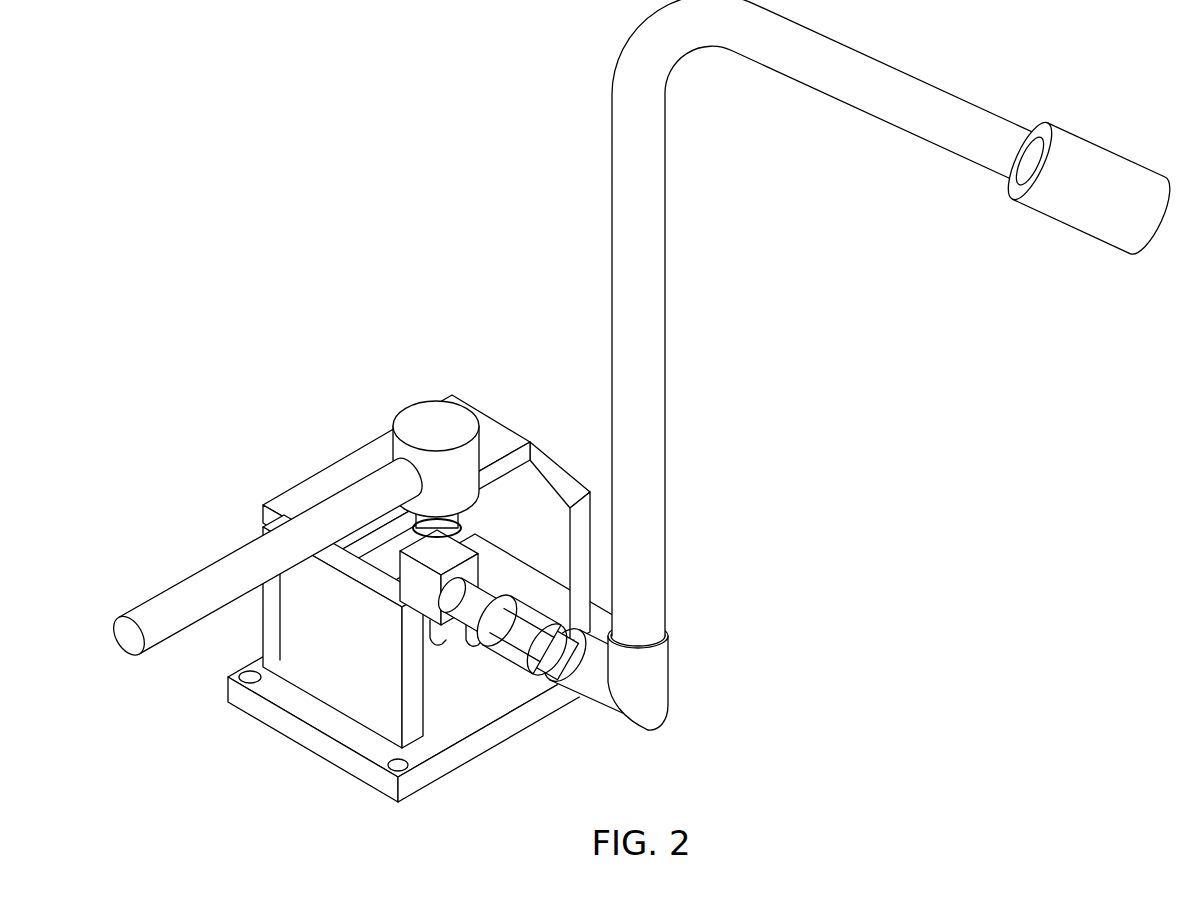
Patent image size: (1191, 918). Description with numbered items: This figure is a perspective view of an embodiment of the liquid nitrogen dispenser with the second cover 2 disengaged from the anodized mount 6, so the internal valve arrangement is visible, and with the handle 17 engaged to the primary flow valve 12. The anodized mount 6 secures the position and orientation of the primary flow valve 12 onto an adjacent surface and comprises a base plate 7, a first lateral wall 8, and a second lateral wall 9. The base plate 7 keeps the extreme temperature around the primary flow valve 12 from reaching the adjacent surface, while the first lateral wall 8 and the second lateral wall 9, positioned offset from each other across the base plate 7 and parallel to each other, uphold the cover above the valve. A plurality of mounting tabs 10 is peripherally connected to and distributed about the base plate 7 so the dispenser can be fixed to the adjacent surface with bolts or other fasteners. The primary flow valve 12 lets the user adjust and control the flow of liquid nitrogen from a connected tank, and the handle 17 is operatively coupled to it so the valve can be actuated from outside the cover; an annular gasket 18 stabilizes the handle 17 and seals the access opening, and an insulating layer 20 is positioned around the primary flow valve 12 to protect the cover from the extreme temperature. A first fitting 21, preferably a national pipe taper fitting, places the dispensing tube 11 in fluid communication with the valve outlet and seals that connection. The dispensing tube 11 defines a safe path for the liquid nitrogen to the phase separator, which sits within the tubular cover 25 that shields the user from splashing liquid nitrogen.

The second cover 2 is at (310, 493).
The anodized mount 6 is at (553, 727).
The base plate 7 is at (503, 727).
The first lateral wall 8 is at (300, 647).
The second lateral wall 9 is at (572, 492).
The plurality of mounting tabs 10 is at (240, 668).
The dispensing tube 11 is at (627, 258).
The primary flow valve 12 is at (440, 645).
The handle 17 is at (428, 410).
The annular gasket 18 is at (465, 516).
The insulating layer 20 is at (493, 483).
The first fitting 21 is at (508, 648).
The tubular cover 25 is at (1110, 165).